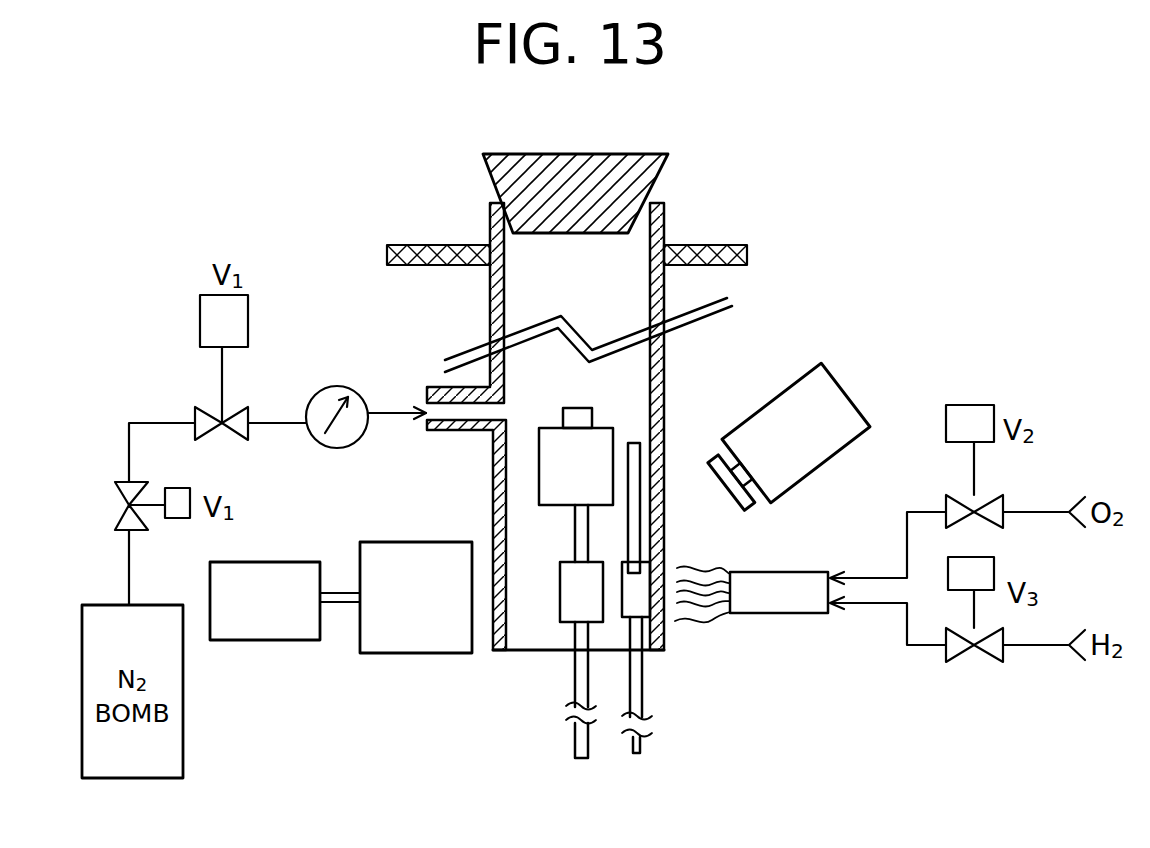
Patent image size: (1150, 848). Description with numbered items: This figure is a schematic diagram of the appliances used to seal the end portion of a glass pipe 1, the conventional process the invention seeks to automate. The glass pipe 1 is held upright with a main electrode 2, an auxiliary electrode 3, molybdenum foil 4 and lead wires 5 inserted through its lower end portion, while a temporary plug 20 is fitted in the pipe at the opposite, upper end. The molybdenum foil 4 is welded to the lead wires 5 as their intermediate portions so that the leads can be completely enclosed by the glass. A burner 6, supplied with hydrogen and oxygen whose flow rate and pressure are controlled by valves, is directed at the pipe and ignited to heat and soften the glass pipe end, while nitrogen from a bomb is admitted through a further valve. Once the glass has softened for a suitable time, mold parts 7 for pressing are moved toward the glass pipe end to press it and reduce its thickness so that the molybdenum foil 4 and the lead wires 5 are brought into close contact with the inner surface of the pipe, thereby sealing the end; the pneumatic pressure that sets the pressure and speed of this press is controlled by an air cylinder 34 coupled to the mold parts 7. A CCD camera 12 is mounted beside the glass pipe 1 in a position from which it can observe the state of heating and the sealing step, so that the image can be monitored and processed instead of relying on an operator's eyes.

The glass pipe 1 is at (664, 350).
The main electrode 2 is at (547, 460).
The auxiliary electrode 3 is at (640, 452).
The molybdenum foil 4 is at (628, 608).
The lead wires 5 is at (575, 692).
The burner 6 is at (770, 598).
The mold parts 7 is at (408, 640).
The CCD camera 12 is at (828, 375).
The temporary plug 20 is at (646, 182).
The air cylinder 34 is at (264, 628).